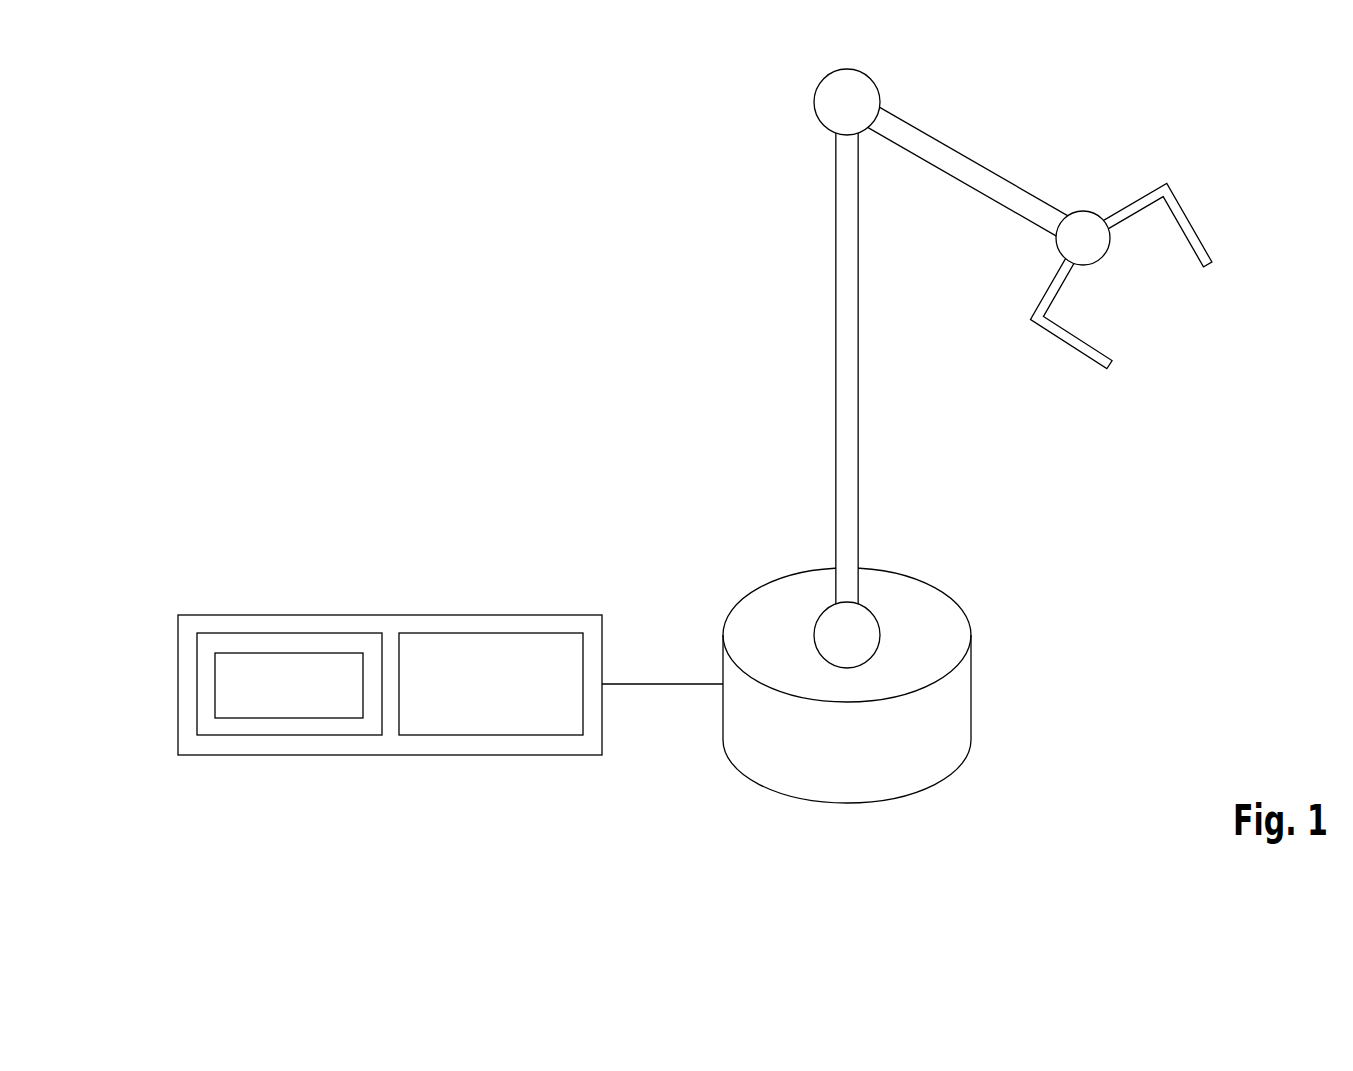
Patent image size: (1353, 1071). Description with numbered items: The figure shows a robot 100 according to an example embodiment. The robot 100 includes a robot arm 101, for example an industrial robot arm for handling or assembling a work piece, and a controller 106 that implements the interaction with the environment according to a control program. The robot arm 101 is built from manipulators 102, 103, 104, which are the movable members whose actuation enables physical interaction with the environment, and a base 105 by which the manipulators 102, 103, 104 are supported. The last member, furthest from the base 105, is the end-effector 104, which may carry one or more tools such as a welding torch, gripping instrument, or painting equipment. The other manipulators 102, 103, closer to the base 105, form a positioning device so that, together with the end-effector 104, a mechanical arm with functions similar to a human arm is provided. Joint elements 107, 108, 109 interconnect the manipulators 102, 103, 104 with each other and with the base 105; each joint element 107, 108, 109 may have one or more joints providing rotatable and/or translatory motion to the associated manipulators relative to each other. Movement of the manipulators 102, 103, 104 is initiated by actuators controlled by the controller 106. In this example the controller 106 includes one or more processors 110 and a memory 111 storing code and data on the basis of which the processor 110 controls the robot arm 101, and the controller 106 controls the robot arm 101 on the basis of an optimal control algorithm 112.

The robot 100 is at (751, 425).
The robot arm 101 is at (992, 368).
The manipulator 102 is at (845, 412).
The manipulator 103 is at (972, 172).
The end-effector 104 is at (1190, 228).
The base 105 is at (955, 703).
The controller 106 is at (390, 652).
The joint element 107 is at (830, 622).
The joint element 108 is at (824, 104).
The joint element 109 is at (1077, 220).
The processor 110 is at (289, 643).
The memory 111 is at (478, 633).
The optimal control algorithm 112 is at (255, 653).